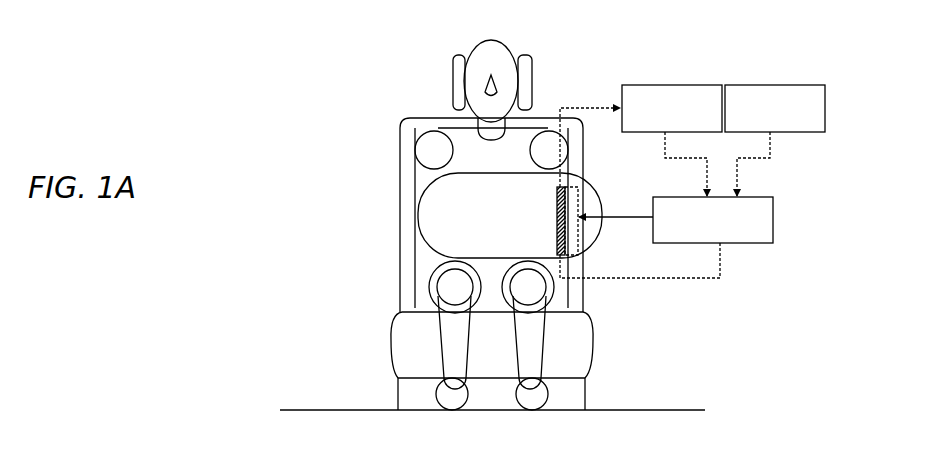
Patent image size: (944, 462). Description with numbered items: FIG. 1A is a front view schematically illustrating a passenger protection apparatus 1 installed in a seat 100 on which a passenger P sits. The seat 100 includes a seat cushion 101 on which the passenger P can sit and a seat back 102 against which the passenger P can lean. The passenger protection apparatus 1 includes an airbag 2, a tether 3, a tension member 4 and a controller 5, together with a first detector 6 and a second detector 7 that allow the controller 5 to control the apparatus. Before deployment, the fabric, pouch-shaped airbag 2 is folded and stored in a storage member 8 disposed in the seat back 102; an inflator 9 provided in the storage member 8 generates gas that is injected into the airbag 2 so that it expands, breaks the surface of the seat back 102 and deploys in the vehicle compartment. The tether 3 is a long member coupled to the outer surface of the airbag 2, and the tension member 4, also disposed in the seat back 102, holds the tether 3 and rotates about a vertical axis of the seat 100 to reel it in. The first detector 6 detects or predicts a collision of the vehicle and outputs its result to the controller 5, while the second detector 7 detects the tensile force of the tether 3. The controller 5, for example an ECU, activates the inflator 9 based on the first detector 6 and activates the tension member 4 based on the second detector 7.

The passenger protection apparatus 1 is at (305, 130).
The airbag 2 is at (417, 207).
The tether 3 is at (556, 190).
The tension member 4 is at (556, 215).
The controller 5 is at (774, 217).
The first detector 6 is at (797, 85).
The second detector 7 is at (688, 85).
The storage member 8 is at (571, 228).
The inflator 9 is at (603, 236).
The seat 100 is at (438, 264).
The seat cushion 101 is at (392, 340).
The seat back 102 is at (400, 299).
The passenger P is at (511, 47).